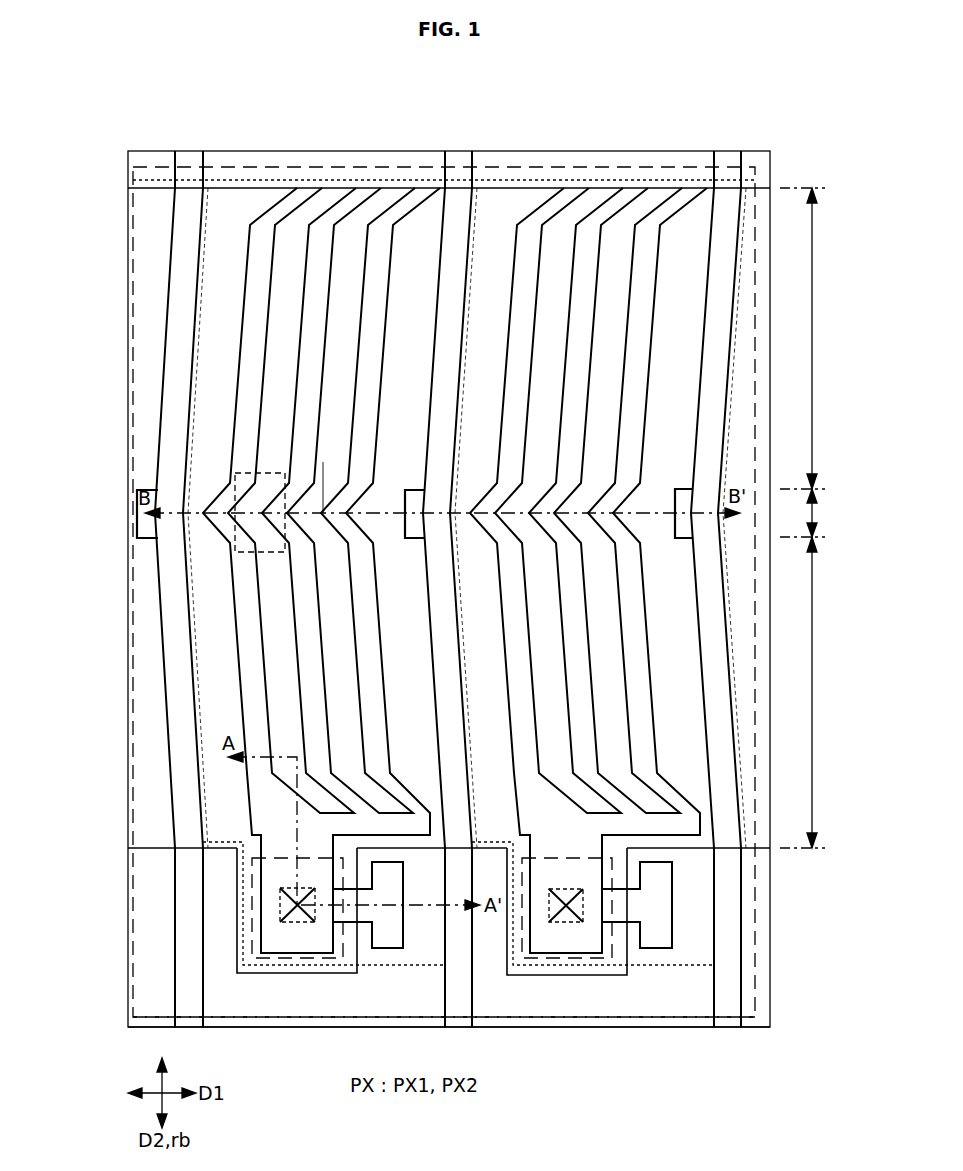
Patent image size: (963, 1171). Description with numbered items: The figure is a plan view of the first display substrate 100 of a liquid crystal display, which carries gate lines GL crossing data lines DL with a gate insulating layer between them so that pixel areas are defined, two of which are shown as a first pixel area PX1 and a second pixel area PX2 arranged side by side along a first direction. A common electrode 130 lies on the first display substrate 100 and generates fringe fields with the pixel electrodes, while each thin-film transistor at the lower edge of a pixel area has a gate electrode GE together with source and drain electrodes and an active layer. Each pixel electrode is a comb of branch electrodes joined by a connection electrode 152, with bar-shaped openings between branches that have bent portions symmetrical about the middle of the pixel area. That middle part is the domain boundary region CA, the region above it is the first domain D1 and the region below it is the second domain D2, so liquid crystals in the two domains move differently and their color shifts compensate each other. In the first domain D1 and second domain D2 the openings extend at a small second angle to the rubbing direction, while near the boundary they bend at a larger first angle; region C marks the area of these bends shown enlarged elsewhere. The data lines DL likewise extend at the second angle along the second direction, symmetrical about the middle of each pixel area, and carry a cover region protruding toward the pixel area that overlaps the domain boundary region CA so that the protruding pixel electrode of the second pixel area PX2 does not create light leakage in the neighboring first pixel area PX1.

The first display substrate 100 is at (362, 134).
The common electrode 130 is at (620, 168).
The connection electrode 152 is at (330, 812).
The data line DL is at (458, 162).
The gate line GL is at (548, 998).
The gate electrode GE is at (150, 893).
The first pixel area PX1 is at (275, 965).
The second pixel area PX2 is at (595, 965).
The region C is at (262, 473).
The first domain D1 is at (813, 338).
The second domain D2 is at (813, 692).
The domain boundary region CA is at (813, 513).